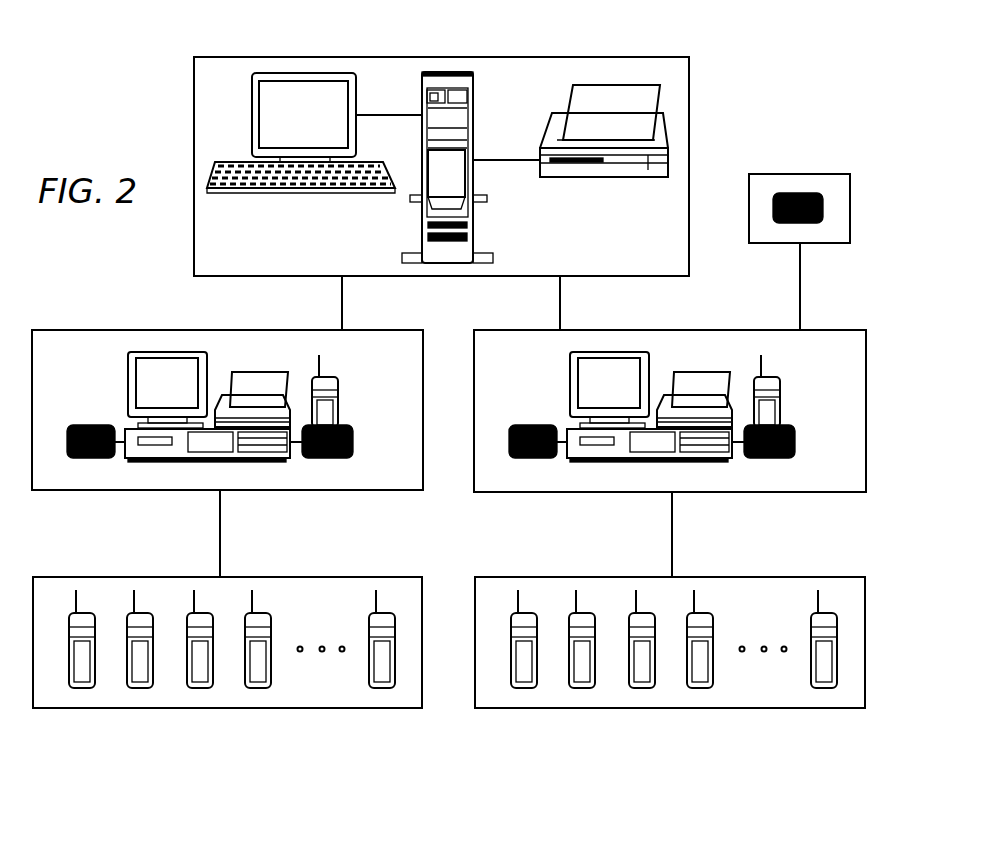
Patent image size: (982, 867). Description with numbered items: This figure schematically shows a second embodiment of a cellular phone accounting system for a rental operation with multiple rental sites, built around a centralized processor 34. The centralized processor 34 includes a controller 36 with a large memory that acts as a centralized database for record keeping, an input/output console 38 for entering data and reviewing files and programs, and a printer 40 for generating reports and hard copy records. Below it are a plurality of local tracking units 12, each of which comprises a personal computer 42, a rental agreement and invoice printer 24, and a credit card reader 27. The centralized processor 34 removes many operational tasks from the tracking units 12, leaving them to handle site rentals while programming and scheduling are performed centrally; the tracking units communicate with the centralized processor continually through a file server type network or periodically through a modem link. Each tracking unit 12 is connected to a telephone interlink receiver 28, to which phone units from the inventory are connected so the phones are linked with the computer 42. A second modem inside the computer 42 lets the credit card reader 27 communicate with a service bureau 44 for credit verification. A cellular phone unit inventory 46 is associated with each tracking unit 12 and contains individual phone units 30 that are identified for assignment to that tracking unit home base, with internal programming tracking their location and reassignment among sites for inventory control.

The local tracking unit 12 is at (449, 392).
The rental agreement and invoice printer 24 is at (502, 362).
The credit card reader 27 is at (304, 481).
The telephone interlink receiver 28 is at (580, 446).
The phone unit 30 is at (453, 671).
The centralized processor 34 is at (472, 165).
The controller 36 is at (468, 144).
The input/output console 38 is at (331, 92).
The printer 40 is at (647, 131).
The personal computer 42 is at (349, 360).
The service bureau 44 is at (799, 190).
The cellular phone unit inventory 46 is at (449, 667).